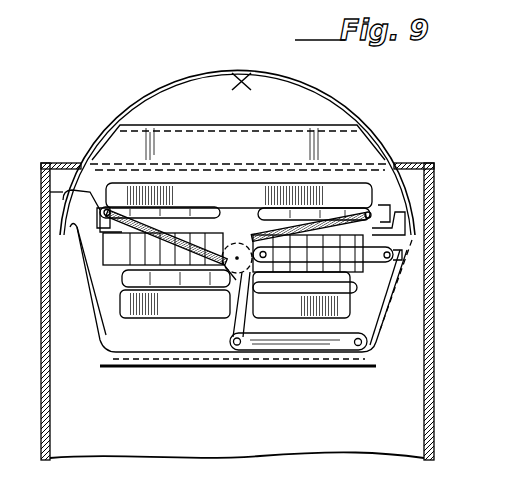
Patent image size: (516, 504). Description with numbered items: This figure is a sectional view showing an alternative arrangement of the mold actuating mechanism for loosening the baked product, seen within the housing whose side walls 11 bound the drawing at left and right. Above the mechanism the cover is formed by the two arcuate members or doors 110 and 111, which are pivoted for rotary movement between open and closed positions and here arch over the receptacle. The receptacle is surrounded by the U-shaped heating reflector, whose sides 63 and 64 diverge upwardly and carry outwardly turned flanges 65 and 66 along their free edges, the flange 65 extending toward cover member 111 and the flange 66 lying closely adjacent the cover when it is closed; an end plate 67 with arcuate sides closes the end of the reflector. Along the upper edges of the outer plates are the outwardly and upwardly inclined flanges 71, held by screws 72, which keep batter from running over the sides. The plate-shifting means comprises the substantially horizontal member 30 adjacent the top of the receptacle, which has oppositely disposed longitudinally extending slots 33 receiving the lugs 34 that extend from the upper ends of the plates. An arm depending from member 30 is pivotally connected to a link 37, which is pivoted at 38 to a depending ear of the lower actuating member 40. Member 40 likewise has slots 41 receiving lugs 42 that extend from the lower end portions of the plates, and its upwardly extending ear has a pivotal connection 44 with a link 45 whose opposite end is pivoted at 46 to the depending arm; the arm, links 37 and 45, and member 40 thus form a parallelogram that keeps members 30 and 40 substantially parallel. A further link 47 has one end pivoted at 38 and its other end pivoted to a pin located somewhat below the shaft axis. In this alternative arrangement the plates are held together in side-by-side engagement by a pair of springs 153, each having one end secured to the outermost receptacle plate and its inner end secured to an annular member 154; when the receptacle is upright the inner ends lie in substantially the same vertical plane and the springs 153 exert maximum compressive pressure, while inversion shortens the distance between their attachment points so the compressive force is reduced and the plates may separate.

The side walls 11 is at (45, 316).
The horizontal member 30 is at (306, 192).
The longitudinally extending slots 33 is at (336, 208).
The lugs 34 is at (175, 207).
The link 37 is at (280, 345).
The pivot 38 is at (232, 346).
The lower actuating member 40 is at (186, 322).
The slots 41 is at (310, 335).
The lugs 42 is at (153, 295).
The pivotal connection 44 is at (256, 304).
The link 45 is at (395, 233).
The pivot 46 is at (390, 252).
The link 47 is at (225, 305).
The side of reflector 63 is at (372, 347).
The side of reflector 64 is at (100, 333).
The outwardly turned flange 65 is at (52, 237).
The outwardly turned flange 66 is at (398, 254).
The end plate 67 is at (98, 363).
The inclined flanges 71 is at (50, 191).
The screws 72 is at (405, 221).
The cover member 110 is at (300, 80).
The cover member 111 is at (188, 80).
The spring 153 is at (280, 207).
The annular member 154 is at (233, 292).